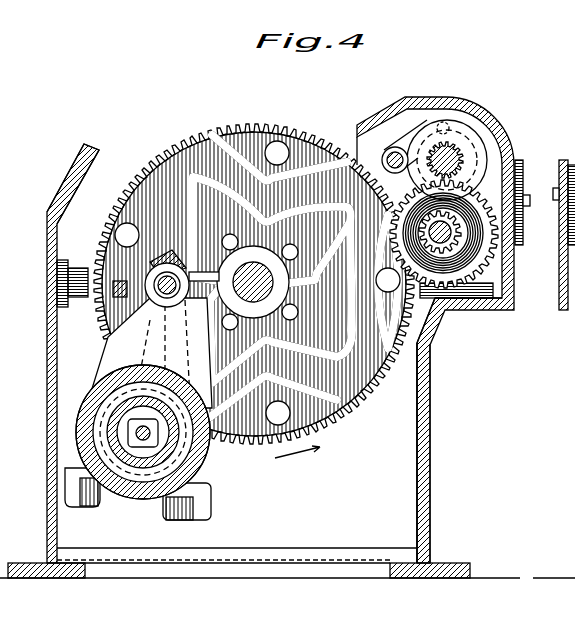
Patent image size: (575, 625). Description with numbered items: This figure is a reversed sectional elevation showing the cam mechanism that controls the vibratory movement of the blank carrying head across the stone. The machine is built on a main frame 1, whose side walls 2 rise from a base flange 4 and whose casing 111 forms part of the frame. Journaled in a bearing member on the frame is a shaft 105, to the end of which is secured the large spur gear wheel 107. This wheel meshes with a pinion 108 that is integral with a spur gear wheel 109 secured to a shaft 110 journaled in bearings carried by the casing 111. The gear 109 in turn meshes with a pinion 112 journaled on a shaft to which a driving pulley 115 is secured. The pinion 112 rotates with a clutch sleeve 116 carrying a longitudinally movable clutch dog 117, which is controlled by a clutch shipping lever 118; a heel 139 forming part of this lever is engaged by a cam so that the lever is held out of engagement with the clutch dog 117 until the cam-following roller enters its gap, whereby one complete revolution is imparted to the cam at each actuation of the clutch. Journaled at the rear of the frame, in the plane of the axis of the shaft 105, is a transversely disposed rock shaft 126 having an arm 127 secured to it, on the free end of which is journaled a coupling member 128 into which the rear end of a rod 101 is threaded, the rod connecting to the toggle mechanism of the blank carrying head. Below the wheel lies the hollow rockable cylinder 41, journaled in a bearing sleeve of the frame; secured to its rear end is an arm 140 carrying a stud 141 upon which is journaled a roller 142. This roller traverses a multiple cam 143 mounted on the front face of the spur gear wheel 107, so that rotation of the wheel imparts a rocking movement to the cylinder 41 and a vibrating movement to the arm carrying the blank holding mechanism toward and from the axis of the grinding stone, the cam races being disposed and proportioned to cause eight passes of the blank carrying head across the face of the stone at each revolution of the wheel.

The main frame 1 is at (430, 468).
The frame side wall 2 is at (46, 365).
The base 4 is at (463, 565).
The hollow rockable cylinder 41 is at (97, 458).
The rod 101 is at (100, 445).
The shaft 105 is at (275, 305).
The spur gear wheel 107 is at (302, 124).
The pinion 108 is at (488, 281).
The spur gear wheel 109 is at (513, 215).
The shaft 110 is at (440, 357).
The casing 111 is at (441, 348).
The pinion 112 is at (462, 158).
The driving pulley 115 is at (465, 150).
The clutch sleeve 116 is at (463, 143).
The clutch dog 117 is at (460, 137).
The clutch shipping lever 118 is at (410, 157).
The rock shaft 126 is at (440, 240).
The arm 127 is at (100, 407).
The coupling member 128 is at (115, 425).
The heel 139 is at (365, 157).
The arm 140 is at (100, 355).
The stud 141 is at (155, 290).
The roller 142 is at (52, 253).
The multiple cam 143 is at (158, 204).